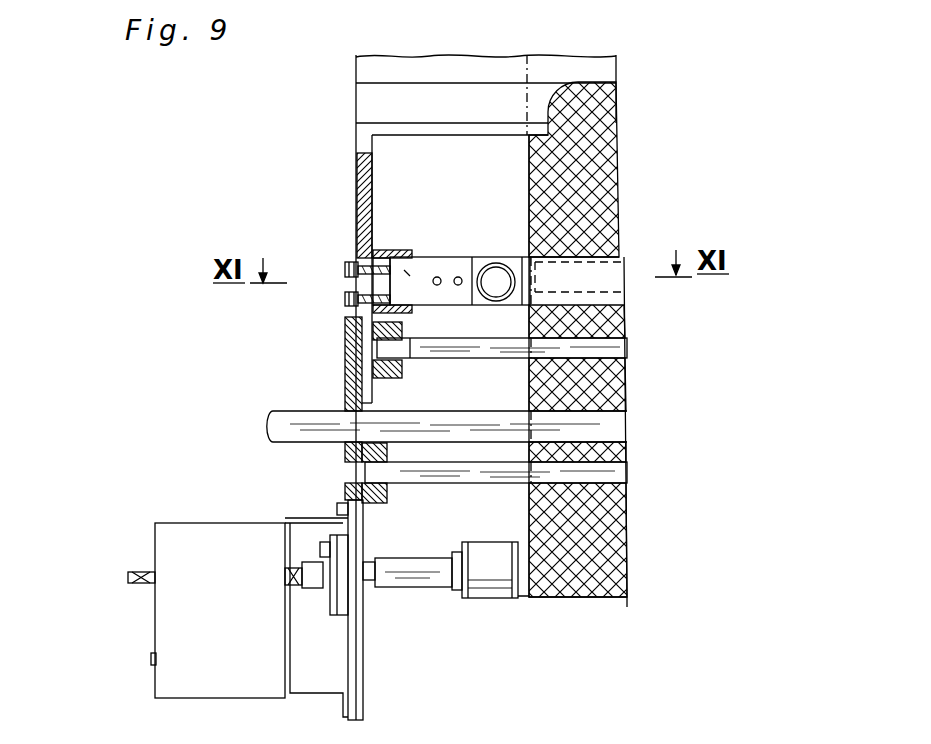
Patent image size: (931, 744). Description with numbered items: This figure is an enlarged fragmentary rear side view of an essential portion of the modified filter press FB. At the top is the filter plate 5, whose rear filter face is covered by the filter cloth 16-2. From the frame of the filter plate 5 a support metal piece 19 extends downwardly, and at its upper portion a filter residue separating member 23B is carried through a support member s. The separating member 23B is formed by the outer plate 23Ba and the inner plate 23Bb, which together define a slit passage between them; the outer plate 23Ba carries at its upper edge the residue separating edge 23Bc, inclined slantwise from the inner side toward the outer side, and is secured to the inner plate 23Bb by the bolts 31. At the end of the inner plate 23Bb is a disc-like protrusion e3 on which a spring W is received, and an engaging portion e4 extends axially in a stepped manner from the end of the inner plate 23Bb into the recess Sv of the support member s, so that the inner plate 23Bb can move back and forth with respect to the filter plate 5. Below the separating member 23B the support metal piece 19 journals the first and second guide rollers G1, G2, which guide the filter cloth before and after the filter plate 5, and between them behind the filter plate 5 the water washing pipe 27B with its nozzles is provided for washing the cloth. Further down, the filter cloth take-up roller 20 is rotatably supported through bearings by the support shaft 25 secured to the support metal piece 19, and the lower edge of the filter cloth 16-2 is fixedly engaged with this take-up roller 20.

The filter plate 5 is at (367, 70).
The support metal piece 19 is at (360, 178).
The filter residue separating member 23B is at (387, 277).
The recess Sv is at (373, 257).
The engaging portion e4 is at (347, 290).
The support member s is at (407, 273).
The bolts 31 is at (456, 284).
The spring W is at (482, 265).
The water washing pipe 27B is at (595, 415).
The first guide roller G1 is at (627, 343).
The second guide roller G2 is at (618, 465).
The support shaft 25 is at (417, 575).
The filter cloth take-up roller 20 is at (492, 600).
The filter press FB is at (663, 55).
The disc-like protrusion e3 is at (494, 258).
The filter cloth 16-2 is at (651, 331).
The residue separating edge 23Bc is at (600, 262).
The outer plate 23Ba is at (603, 273).
The inner plate 23Bb is at (627, 318).